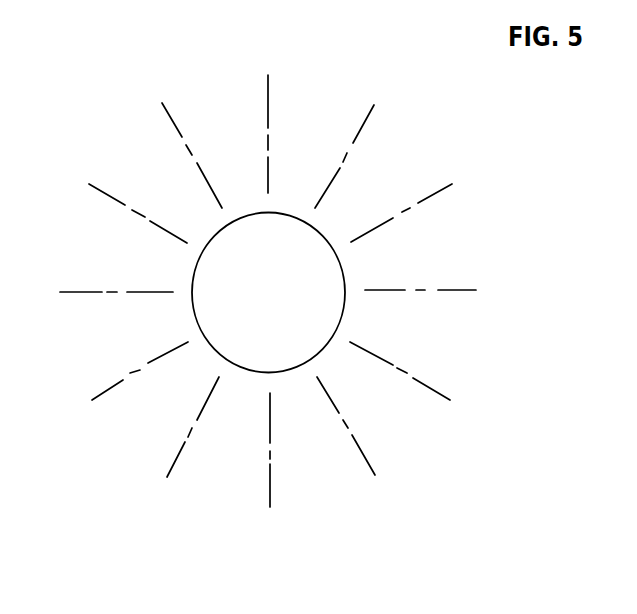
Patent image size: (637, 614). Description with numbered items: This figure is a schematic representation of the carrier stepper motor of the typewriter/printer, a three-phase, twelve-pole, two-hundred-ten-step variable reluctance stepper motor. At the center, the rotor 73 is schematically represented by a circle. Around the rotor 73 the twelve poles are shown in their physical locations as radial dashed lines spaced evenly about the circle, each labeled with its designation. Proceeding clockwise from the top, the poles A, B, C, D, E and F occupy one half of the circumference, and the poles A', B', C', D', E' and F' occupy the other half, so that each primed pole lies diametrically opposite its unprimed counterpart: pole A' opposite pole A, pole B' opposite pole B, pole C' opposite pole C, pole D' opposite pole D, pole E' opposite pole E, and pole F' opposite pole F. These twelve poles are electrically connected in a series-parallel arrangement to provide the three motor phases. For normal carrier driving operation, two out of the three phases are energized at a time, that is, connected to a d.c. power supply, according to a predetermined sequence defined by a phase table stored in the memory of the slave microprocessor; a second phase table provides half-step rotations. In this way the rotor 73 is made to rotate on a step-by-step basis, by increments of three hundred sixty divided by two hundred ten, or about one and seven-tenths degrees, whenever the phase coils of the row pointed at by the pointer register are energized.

The rotor 73 is at (347, 270).
The pole A is at (268, 121).
The pole A' is at (272, 463).
The pole B is at (350, 144).
The pole B' is at (184, 440).
The pole C is at (408, 202).
The pole C' is at (128, 378).
The pole D is at (429, 290).
The pole D' is at (106, 292).
The pole E is at (407, 378).
The pole E' is at (128, 203).
The pole F is at (352, 440).
The pole F' is at (185, 143).